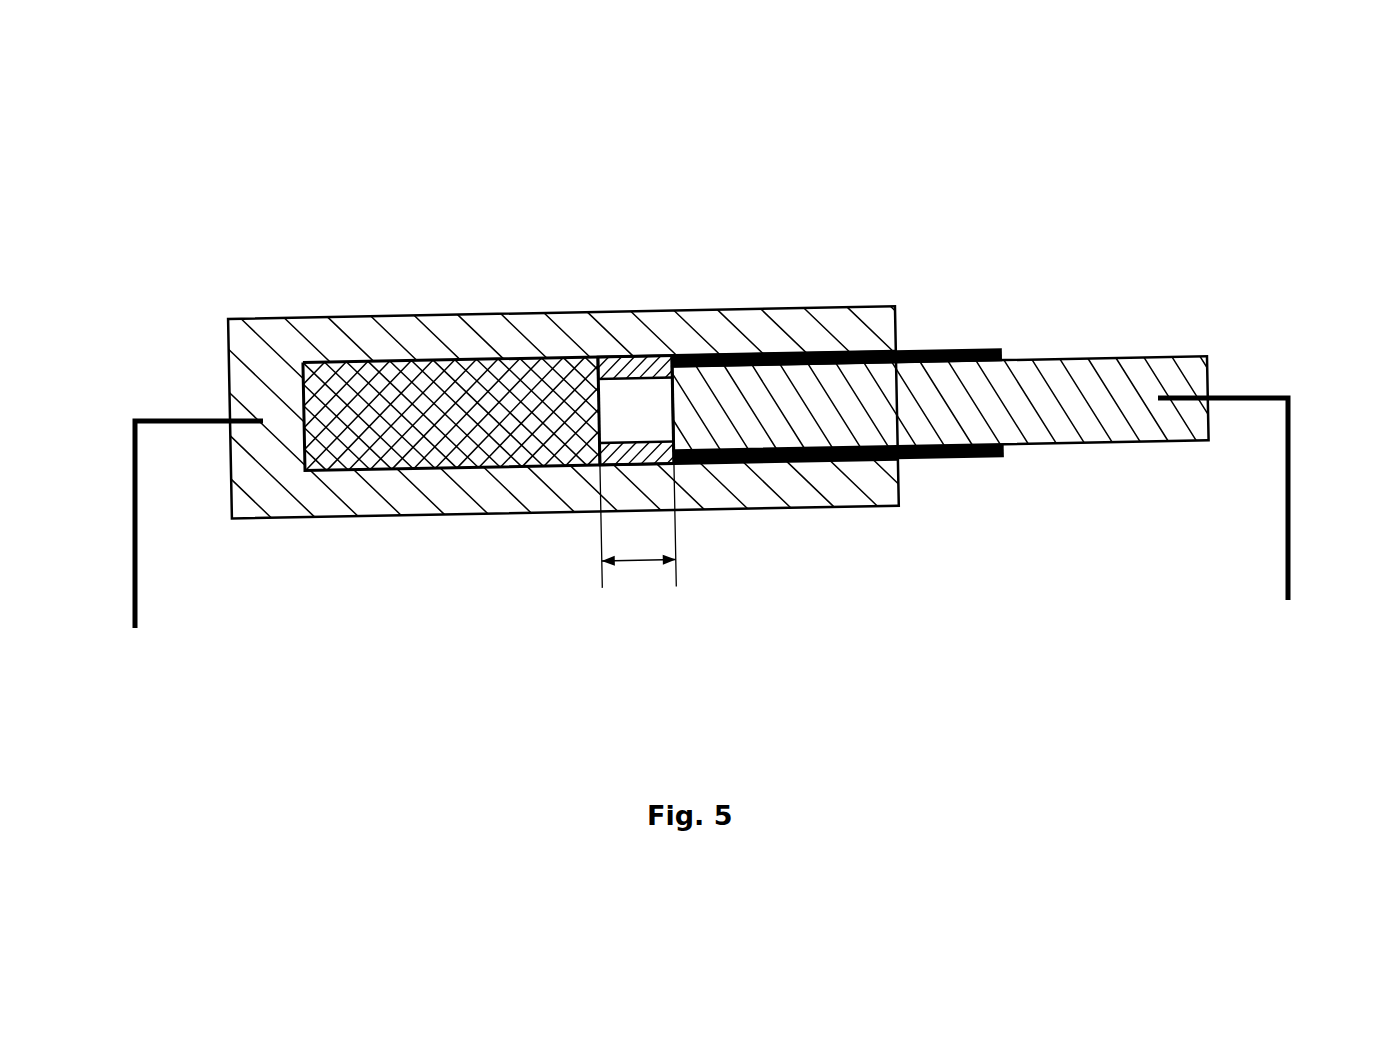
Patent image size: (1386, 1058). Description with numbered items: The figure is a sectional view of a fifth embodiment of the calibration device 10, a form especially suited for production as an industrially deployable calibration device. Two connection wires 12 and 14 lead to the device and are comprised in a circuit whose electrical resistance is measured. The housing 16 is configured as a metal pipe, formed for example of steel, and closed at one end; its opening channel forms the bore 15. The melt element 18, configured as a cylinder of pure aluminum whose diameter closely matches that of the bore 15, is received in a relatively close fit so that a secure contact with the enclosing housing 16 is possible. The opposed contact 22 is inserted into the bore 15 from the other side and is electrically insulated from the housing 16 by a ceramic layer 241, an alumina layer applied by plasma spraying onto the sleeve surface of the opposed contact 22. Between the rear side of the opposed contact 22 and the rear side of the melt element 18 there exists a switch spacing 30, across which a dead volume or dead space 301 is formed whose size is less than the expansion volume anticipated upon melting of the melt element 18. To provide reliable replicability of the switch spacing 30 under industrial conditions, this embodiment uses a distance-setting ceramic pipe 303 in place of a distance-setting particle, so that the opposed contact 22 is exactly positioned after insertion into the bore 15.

The calibration device 10 is at (688, 427).
The connection wire 12 is at (133, 522).
The connection wire 14 is at (1288, 543).
The bore 15 is at (812, 345).
The housing 16 is at (458, 340).
The melt element 18 is at (437, 453).
The opposed contact 22 is at (1122, 372).
The ceramic layer 241 is at (978, 460).
The switch spacing 30 is at (643, 562).
The dead space 301 is at (627, 417).
The distance-setting ceramic pipe 303 is at (651, 372).